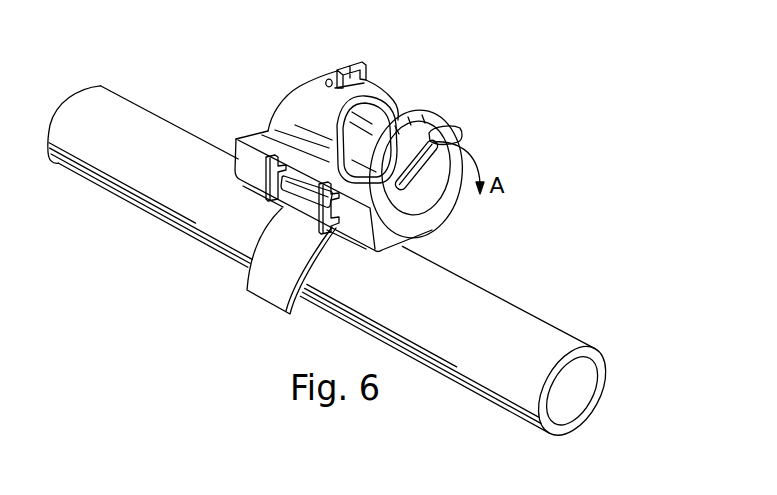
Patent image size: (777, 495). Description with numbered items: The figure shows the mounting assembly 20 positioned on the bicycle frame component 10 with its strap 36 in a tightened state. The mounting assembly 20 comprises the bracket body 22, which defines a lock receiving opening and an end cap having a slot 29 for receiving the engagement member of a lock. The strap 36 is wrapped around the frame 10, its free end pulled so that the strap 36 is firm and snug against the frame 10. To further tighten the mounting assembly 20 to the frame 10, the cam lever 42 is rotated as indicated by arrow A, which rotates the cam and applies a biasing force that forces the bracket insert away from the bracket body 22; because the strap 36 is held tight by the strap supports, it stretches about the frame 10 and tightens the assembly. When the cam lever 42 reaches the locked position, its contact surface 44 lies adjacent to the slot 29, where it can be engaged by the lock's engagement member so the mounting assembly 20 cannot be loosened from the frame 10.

The bicycle frame component 10 is at (125, 99).
The mounting assembly 20 is at (287, 99).
The bracket body 22 is at (375, 80).
The slot 29 is at (425, 175).
The strap 36 is at (257, 252).
The cam lever 42 is at (430, 131).
The contact surface 44 is at (433, 140).